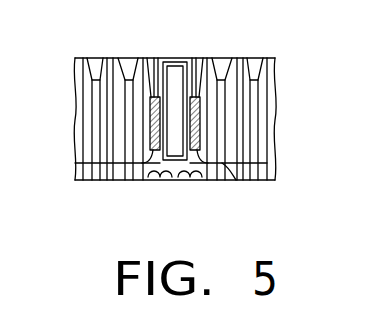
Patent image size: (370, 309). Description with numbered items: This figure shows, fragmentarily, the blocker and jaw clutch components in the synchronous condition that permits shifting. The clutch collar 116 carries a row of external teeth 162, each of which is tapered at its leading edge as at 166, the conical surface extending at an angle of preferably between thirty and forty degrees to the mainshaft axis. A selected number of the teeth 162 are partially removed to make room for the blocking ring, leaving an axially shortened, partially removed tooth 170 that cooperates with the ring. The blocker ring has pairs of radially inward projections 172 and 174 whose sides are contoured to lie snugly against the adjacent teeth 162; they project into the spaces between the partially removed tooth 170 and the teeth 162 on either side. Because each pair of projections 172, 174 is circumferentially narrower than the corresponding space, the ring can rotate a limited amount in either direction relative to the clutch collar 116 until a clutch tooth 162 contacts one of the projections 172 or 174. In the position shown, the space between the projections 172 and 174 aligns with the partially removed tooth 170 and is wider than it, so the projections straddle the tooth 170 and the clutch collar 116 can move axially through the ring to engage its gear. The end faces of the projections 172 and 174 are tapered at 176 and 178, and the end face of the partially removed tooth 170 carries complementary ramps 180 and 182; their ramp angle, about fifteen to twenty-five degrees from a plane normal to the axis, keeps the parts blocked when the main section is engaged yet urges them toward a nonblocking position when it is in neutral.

The clutch collar 116 is at (291, 62).
The teeth 162 is at (70, 163).
The taper 166 is at (215, 67).
The partially removed tooth 170 is at (175, 180).
The radially inward projection 172 is at (197, 68).
The radially inward projection 174 is at (155, 58).
The taper 176 is at (236, 180).
The taper 178 is at (150, 164).
The ramp 180 is at (190, 166).
The ramp 182 is at (153, 166).